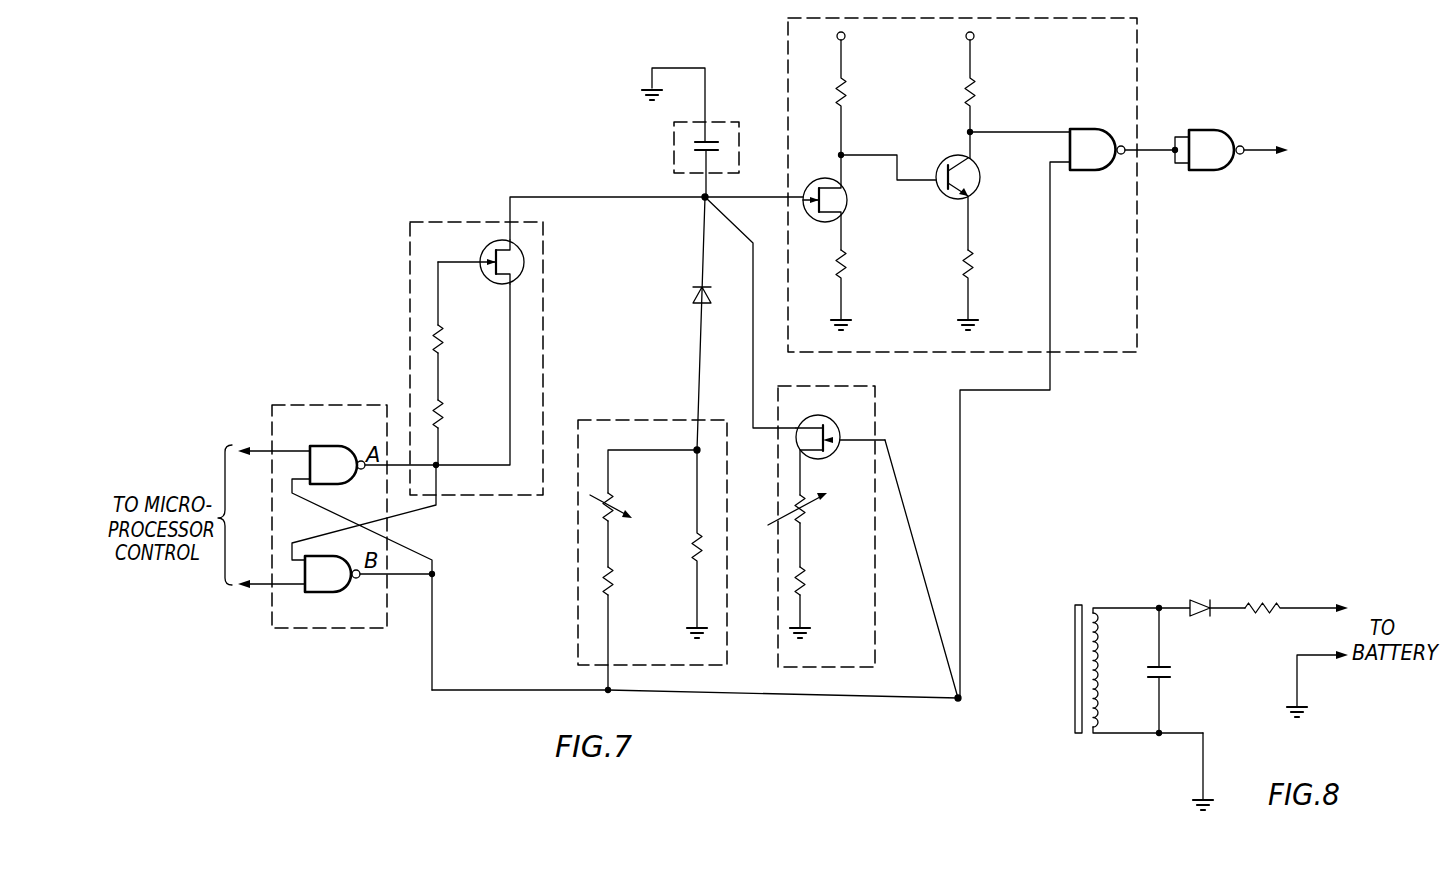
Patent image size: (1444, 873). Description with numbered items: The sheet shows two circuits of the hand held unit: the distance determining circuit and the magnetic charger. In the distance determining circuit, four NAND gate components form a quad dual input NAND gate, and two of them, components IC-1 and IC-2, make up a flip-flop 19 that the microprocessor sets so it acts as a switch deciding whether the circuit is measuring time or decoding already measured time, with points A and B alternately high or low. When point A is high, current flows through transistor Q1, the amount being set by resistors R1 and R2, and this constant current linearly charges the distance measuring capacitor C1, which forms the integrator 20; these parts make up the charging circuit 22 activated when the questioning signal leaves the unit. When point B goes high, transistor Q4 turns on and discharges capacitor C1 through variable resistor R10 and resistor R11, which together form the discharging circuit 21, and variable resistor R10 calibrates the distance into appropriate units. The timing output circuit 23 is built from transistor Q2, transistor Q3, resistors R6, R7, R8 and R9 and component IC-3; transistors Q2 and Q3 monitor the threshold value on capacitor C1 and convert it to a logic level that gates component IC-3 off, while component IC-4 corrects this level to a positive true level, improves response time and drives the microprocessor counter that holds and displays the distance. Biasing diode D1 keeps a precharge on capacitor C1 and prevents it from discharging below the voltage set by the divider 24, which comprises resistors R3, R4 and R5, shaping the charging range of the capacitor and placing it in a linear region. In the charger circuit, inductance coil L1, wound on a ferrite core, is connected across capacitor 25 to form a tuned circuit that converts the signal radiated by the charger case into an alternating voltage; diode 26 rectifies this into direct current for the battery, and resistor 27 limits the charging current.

In FIG. 7, the flip-flop 19 is at (315, 404).
In FIG. 7, the NAND gate component IC-1 is at (335, 447).
In FIG. 7, the NAND gate component IC-2 is at (318, 592).
In FIG. 7, the charging circuit 22 is at (410, 262).
In FIG. 7, the transistor Q1 is at (500, 240).
In FIG. 7, the variable resistance R1 is at (447, 345).
In FIG. 7, the resistor R2 is at (447, 412).
In FIG. 7, the integrator 20 is at (724, 121).
In FIG. 7, the distance measuring capacitor C1 is at (722, 150).
In FIG. 7, the biasing diode D1 is at (695, 293).
In FIG. 7, the timing output circuit 23 is at (787, 29).
In FIG. 7, the resistor R7 is at (850, 85).
In FIG. 7, the resistor R9 is at (980, 85).
In FIG. 7, the transistor Q2 is at (849, 203).
In FIG. 7, the transistor Q3 is at (981, 177).
In FIG. 7, the resistor R6 is at (848, 272).
In FIG. 7, the resistor R8 is at (975, 270).
In FIG. 7, the NAND gate component IC-3 is at (1098, 131).
In FIG. 7, the NAND gate component IC-4 is at (1230, 131).
In FIG. 7, the divider 24 is at (578, 597).
In FIG. 7, the resistor R4 is at (615, 493).
In FIG. 7, the resistor R5 is at (694, 536).
In FIG. 7, the resistor R3 is at (613, 590).
In FIG. 7, the discharging circuit 21 is at (875, 422).
In FIG. 7, the transistor Q4 is at (845, 418).
In FIG. 7, the variable resistor R10 is at (806, 525).
In FIG. 7, the resistor R11 is at (805, 598).
In FIG. 8, the inductance coil L1 is at (1072, 722).
In FIG. 8, the capacitor 25 is at (1168, 680).
In FIG. 8, the diode 26 is at (1190, 603).
In FIG. 8, the resistor 27 is at (1253, 603).